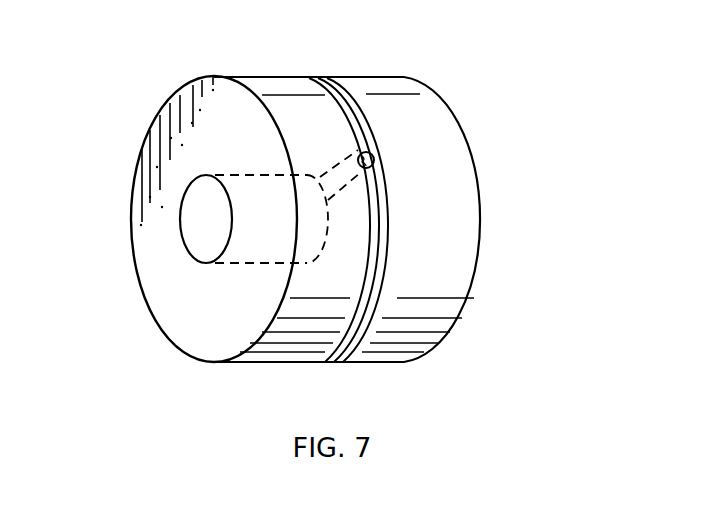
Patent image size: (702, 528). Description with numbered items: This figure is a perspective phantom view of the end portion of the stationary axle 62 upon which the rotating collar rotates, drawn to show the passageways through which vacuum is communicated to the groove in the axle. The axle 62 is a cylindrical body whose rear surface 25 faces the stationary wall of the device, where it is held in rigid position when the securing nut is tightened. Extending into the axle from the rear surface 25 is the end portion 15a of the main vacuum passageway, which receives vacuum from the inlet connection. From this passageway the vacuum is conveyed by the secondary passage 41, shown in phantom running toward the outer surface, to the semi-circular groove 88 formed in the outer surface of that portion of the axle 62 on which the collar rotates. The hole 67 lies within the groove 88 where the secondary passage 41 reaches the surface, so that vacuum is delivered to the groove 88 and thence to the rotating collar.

The axle 62 is at (447, 230).
The rear surface 25 is at (153, 262).
The end portion of passageway 15a is at (263, 233).
The secondary vacuum passageway 41 is at (335, 167).
The groove 88 is at (362, 130).
The hole 67 is at (375, 158).